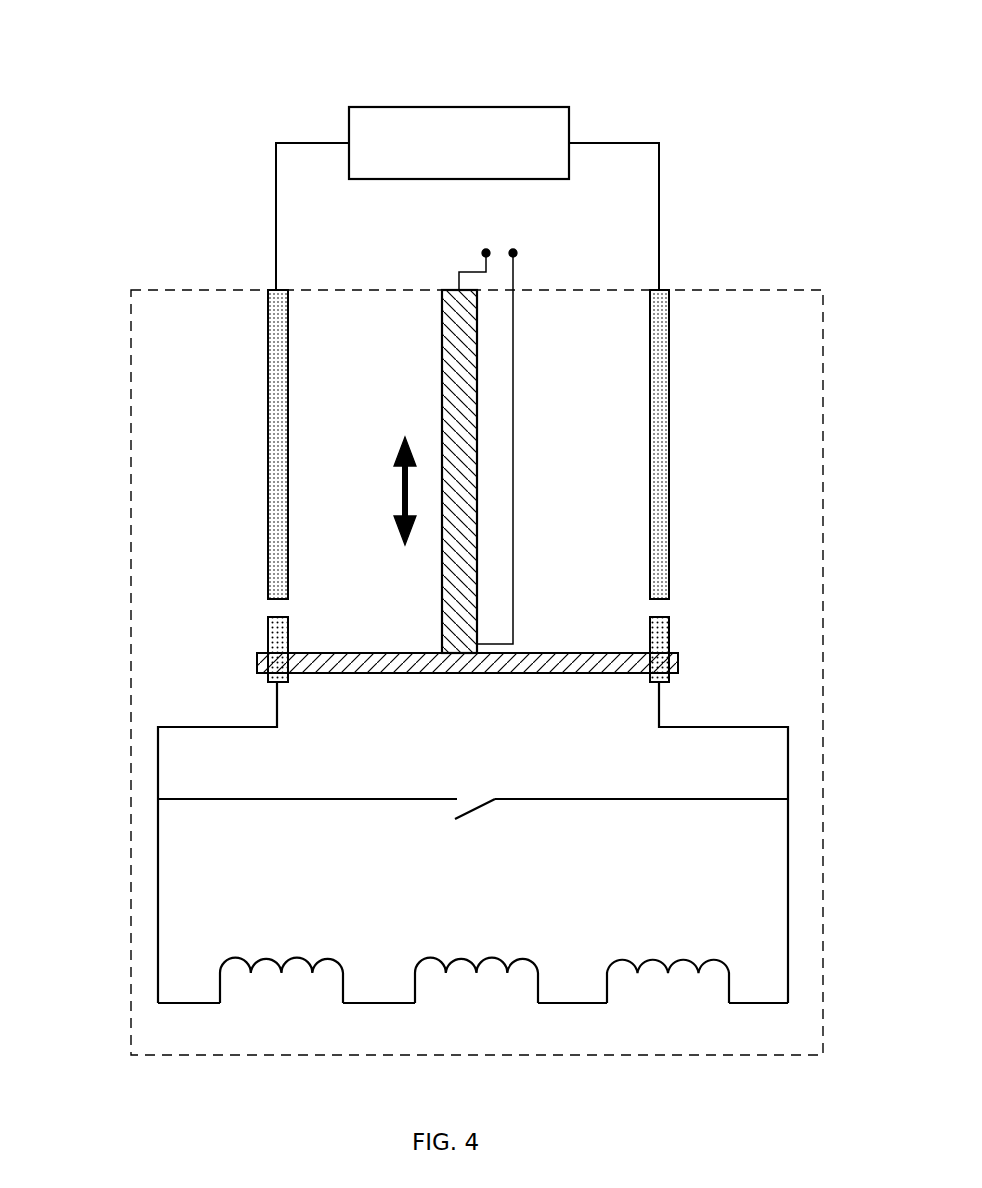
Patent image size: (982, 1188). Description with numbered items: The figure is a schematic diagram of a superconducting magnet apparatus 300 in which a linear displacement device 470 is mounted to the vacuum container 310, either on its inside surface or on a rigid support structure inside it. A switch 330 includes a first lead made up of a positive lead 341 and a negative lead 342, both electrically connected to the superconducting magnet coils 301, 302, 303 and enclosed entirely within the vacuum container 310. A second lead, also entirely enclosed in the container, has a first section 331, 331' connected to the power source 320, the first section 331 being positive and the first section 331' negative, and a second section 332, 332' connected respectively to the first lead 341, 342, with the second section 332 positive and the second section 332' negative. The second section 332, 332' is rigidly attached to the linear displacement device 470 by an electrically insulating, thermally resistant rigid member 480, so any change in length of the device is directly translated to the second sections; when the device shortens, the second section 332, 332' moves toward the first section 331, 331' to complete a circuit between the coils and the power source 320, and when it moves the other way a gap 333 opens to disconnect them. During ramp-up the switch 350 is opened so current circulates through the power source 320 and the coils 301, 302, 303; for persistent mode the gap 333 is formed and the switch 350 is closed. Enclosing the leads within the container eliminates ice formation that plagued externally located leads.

The superconducting magnet apparatus 300 is at (130, 57).
The power source 320 is at (480, 156).
The switch 330 is at (249, 352).
The first section 331 is at (237, 444).
The first section 331' is at (706, 444).
The second section 332 is at (235, 649).
The second section 332' is at (708, 649).
The gap 333 is at (272, 608).
The linear displacement device 470 is at (453, 372).
The rigid member 480 is at (580, 673).
The positive lead 341 is at (158, 762).
The negative lead 342 is at (788, 752).
The switch 350 is at (465, 800).
The vacuum container 310 is at (690, 1043).
The superconducting magnet coil 301 is at (283, 957).
The superconducting magnet coil 302 is at (478, 957).
The superconducting magnet coil 303 is at (672, 957).